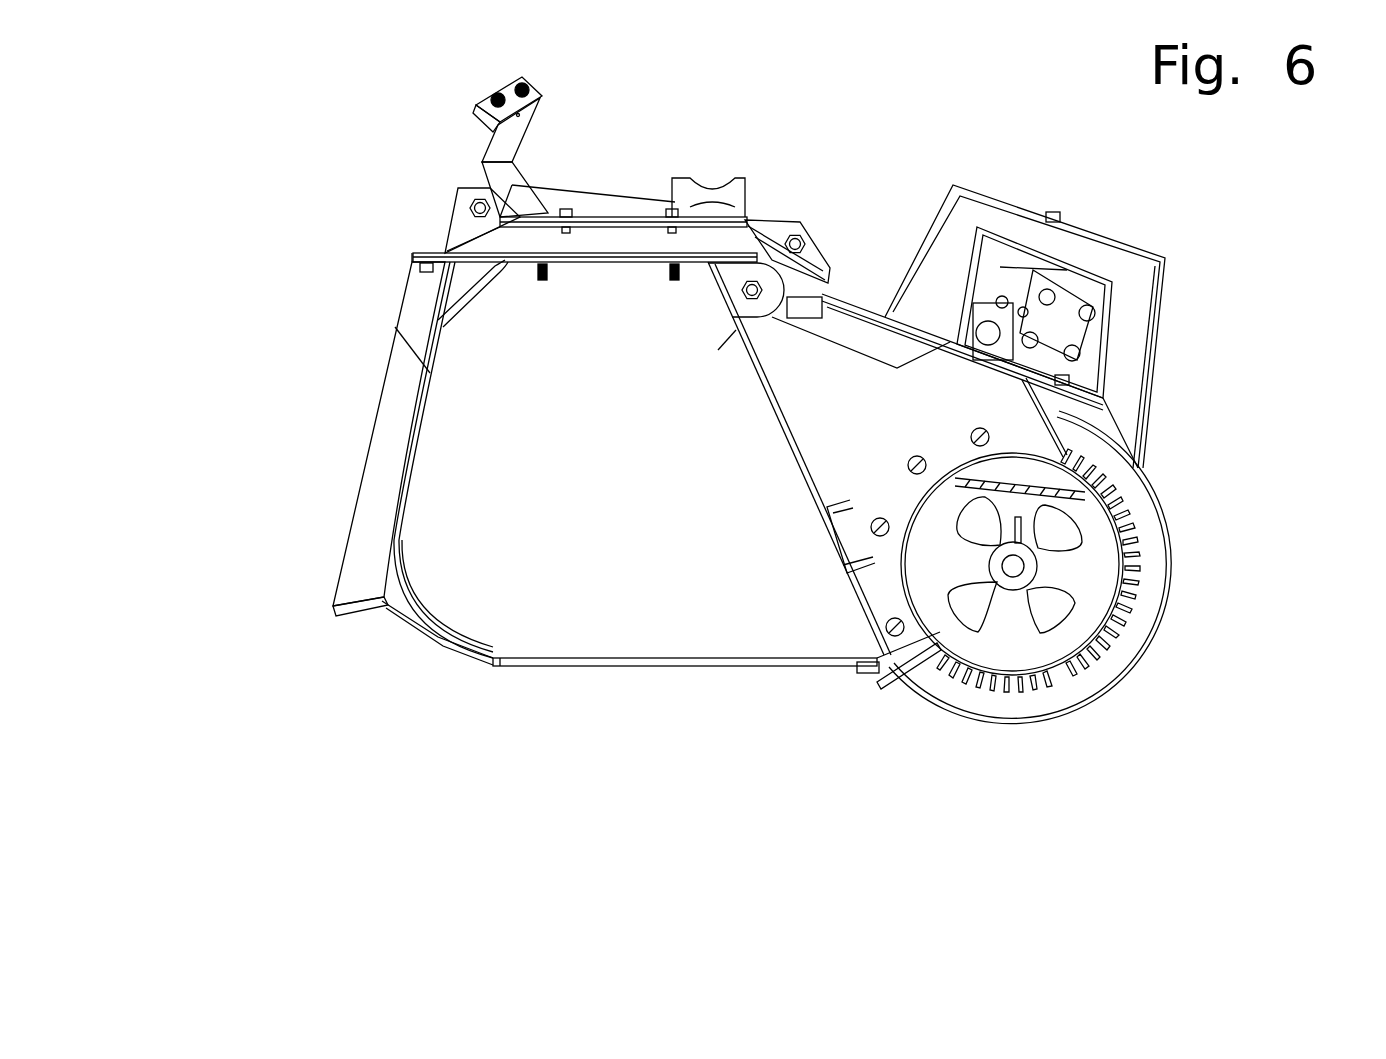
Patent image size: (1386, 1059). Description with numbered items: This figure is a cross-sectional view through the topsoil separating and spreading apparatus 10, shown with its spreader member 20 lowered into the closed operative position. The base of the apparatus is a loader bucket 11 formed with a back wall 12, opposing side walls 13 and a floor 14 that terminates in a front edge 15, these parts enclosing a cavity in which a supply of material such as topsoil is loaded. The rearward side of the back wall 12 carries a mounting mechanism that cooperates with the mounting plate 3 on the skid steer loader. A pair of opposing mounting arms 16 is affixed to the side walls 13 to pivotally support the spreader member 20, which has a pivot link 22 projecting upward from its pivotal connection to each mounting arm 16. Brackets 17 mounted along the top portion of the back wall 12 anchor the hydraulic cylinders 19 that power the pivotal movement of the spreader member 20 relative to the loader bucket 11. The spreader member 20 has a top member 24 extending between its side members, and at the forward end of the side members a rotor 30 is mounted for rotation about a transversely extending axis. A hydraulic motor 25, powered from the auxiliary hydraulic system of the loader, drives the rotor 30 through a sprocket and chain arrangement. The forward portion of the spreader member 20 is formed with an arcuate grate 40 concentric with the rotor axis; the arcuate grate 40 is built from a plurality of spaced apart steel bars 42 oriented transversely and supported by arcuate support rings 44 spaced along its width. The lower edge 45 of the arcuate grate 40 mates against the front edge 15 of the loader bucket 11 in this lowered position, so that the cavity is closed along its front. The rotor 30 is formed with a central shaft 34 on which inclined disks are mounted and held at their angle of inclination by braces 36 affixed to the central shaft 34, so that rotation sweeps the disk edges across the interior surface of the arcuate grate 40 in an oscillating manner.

The mounting plate 3 is at (357, 443).
The topsoil separating and spreading apparatus 10 is at (340, 765).
The loader bucket 11 is at (405, 605).
The back wall 12 is at (420, 427).
The side walls 13 is at (527, 590).
The floor 14 is at (493, 667).
The front edge 15 is at (877, 670).
The mounting arms 16 is at (742, 308).
The brackets 17 is at (457, 217).
The hydraulic cylinders 19 is at (596, 205).
The spreader member 20 is at (1180, 747).
The pivot link 22 is at (783, 237).
The top member 24 is at (523, 257).
The hydraulic motor 25 is at (1057, 283).
The rotor 30 is at (1075, 575).
The central shaft 34 is at (1013, 580).
The braces 36 is at (963, 522).
The arcuate grate 40 is at (1127, 497).
The steel bars 42 is at (1030, 690).
The arcuate support rings 44 is at (1158, 537).
The lower edge 45 is at (897, 670).